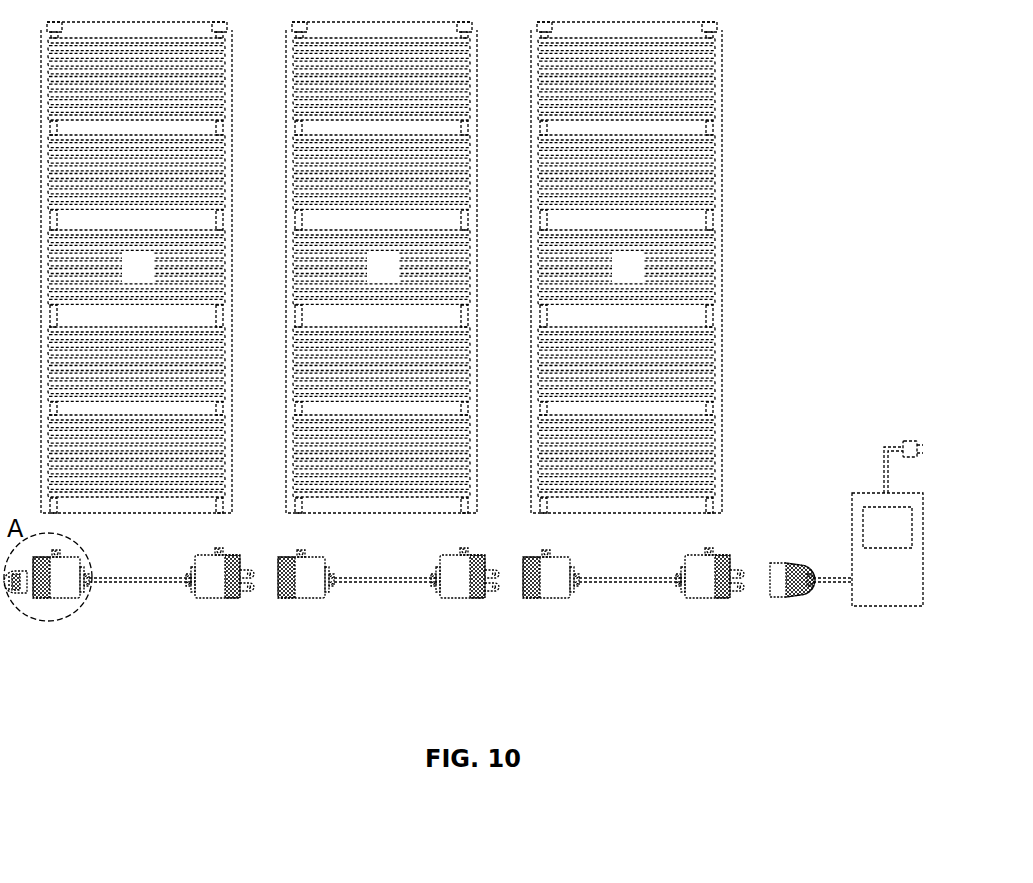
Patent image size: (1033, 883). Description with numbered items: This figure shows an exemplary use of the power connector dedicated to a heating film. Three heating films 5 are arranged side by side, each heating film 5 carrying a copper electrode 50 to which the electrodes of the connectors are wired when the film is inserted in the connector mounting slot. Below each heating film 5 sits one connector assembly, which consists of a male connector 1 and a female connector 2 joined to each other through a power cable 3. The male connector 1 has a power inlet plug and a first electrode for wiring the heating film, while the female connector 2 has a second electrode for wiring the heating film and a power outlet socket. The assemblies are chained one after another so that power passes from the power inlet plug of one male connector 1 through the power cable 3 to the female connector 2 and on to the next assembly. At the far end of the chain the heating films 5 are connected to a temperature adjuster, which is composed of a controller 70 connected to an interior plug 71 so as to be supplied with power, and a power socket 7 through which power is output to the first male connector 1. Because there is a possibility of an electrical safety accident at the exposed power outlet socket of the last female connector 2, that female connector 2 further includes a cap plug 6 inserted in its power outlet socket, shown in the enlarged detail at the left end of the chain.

The male connector 1 is at (213, 592).
The female connector 2 is at (66, 590).
The power cable 3 is at (142, 584).
The heating film 5 is at (130, 279).
The cap plug 6 is at (24, 590).
The power socket 7 is at (781, 600).
The copper electrode 50 is at (717, 412).
The controller 70 is at (876, 588).
The interior plug 71 is at (911, 440).